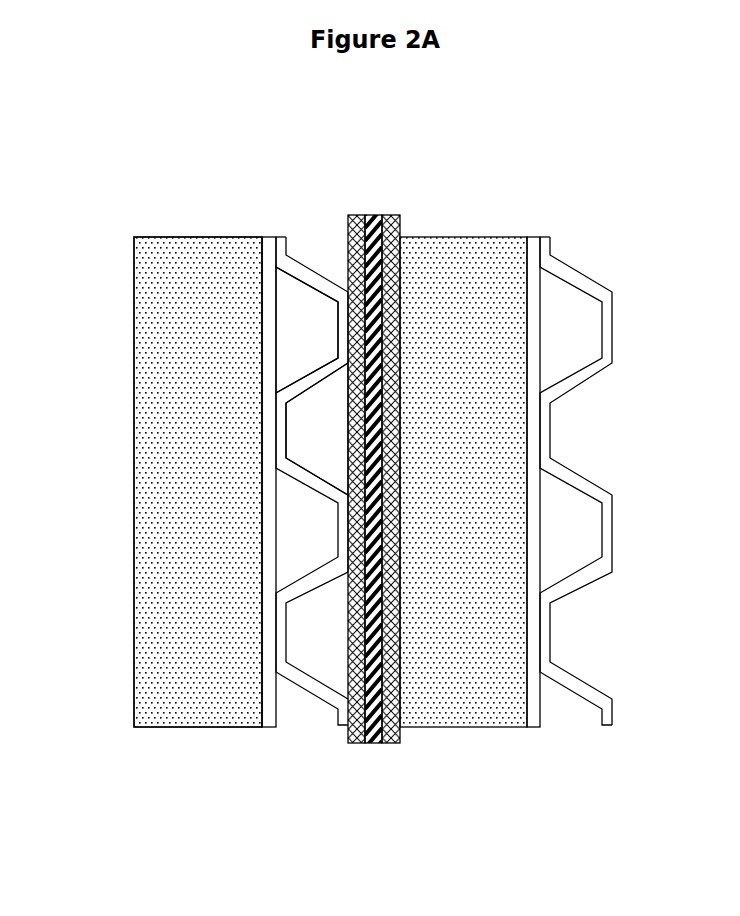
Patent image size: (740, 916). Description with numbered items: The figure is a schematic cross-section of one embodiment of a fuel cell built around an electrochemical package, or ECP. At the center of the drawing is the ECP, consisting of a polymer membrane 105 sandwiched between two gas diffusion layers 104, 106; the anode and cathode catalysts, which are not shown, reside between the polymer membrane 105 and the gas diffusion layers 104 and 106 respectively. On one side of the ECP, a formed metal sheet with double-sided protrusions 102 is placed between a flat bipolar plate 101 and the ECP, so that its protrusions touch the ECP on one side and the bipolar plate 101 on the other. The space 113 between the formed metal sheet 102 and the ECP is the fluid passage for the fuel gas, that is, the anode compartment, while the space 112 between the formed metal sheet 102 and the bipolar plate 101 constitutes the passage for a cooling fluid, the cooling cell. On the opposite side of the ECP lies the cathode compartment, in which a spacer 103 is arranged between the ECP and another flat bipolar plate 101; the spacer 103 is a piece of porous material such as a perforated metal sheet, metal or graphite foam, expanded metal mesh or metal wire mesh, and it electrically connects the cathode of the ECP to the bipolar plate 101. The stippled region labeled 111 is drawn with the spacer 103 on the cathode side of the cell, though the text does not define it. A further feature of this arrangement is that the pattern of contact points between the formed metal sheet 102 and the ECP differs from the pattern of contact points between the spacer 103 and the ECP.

The flat bipolar plate 101 is at (349, 531).
The formed metal sheet with double-sided protrusions 102 is at (414, 544).
The spacer 103 is at (291, 514).
The gas diffusion layer 104 is at (298, 525).
The polymer membrane 105 is at (316, 540).
The gas diffusion layer 106 is at (339, 555).
The electrode compartment 111 is at (208, 451).
The space (cooling cell) 112 is at (345, 278).
The space (anode compartment) 113 is at (408, 338).